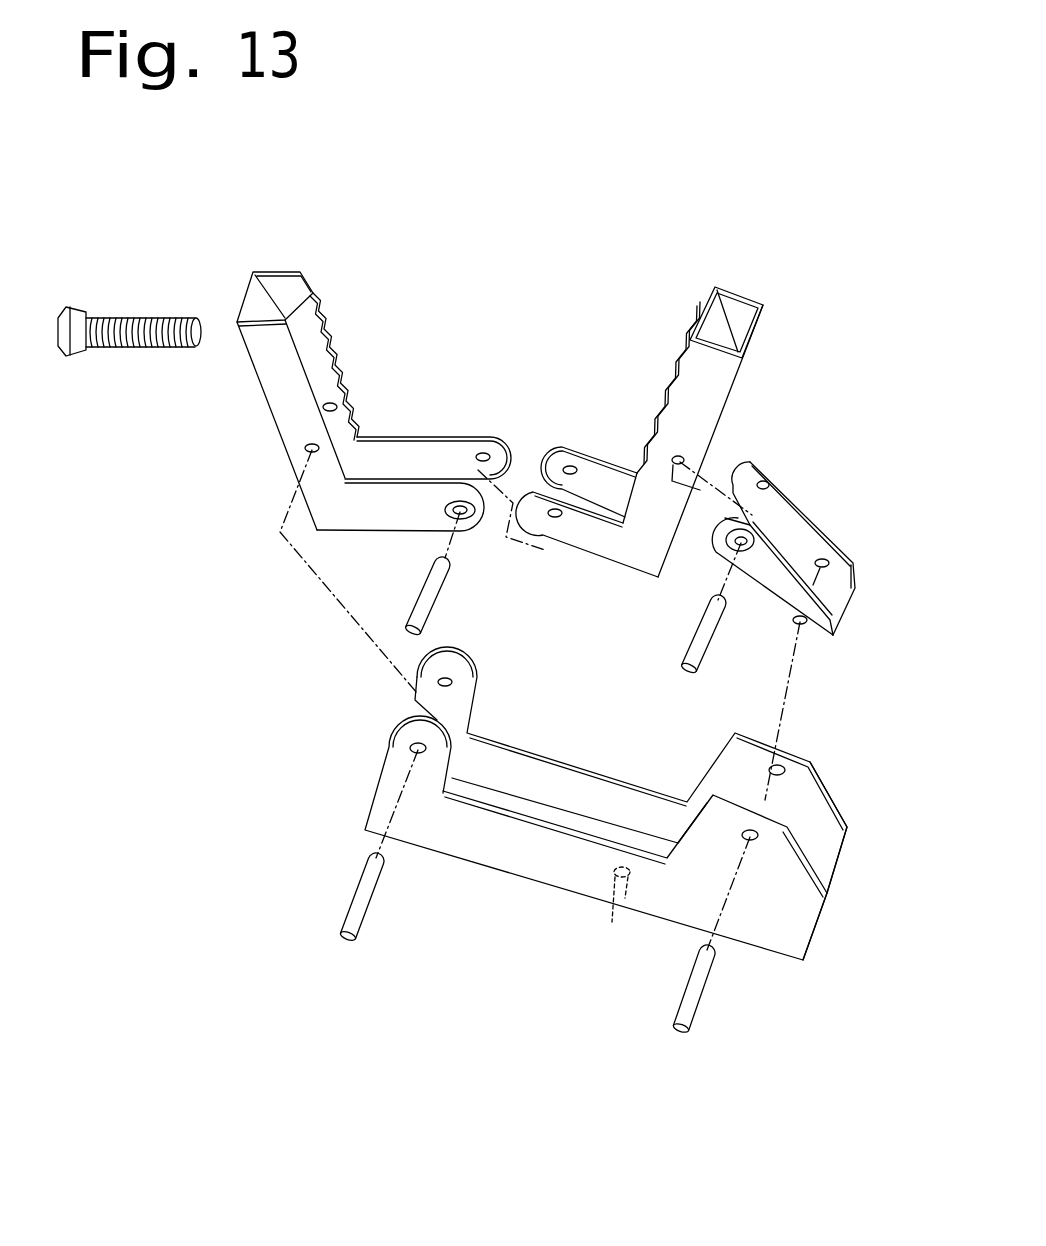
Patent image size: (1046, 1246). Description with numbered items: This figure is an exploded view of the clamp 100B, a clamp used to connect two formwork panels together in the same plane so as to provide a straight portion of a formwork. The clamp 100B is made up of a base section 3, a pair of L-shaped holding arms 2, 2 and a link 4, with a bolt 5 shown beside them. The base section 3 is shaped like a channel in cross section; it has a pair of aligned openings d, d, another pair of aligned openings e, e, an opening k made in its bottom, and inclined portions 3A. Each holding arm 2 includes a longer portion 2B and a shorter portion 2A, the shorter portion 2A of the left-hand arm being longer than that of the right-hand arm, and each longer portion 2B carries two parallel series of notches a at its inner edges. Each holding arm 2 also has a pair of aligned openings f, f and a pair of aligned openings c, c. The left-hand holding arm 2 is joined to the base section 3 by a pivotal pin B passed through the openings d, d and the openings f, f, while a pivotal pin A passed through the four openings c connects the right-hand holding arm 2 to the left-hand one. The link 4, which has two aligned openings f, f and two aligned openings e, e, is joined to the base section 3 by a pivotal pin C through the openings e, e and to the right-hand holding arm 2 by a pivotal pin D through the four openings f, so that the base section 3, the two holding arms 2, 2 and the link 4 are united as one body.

The clamp 100B is at (535, 355).
The bolt 5 is at (133, 318).
The L-shaped holding arm 2 is at (318, 283).
The shorter portion 2A is at (370, 531).
The longer portion 2B is at (262, 393).
The notches a is at (316, 378).
The openings f is at (338, 407).
The openings c is at (483, 452).
The link 4 is at (822, 520).
The openings e is at (840, 566).
The pivotal pin D is at (698, 634).
The pivotal pin A is at (440, 605).
The pivotal pin C is at (553, 525).
The openings d is at (452, 686).
The base section 3 is at (537, 893).
The inclined portions 3A is at (807, 853).
The pivotal pin B is at (370, 903).
The opening k is at (623, 921).